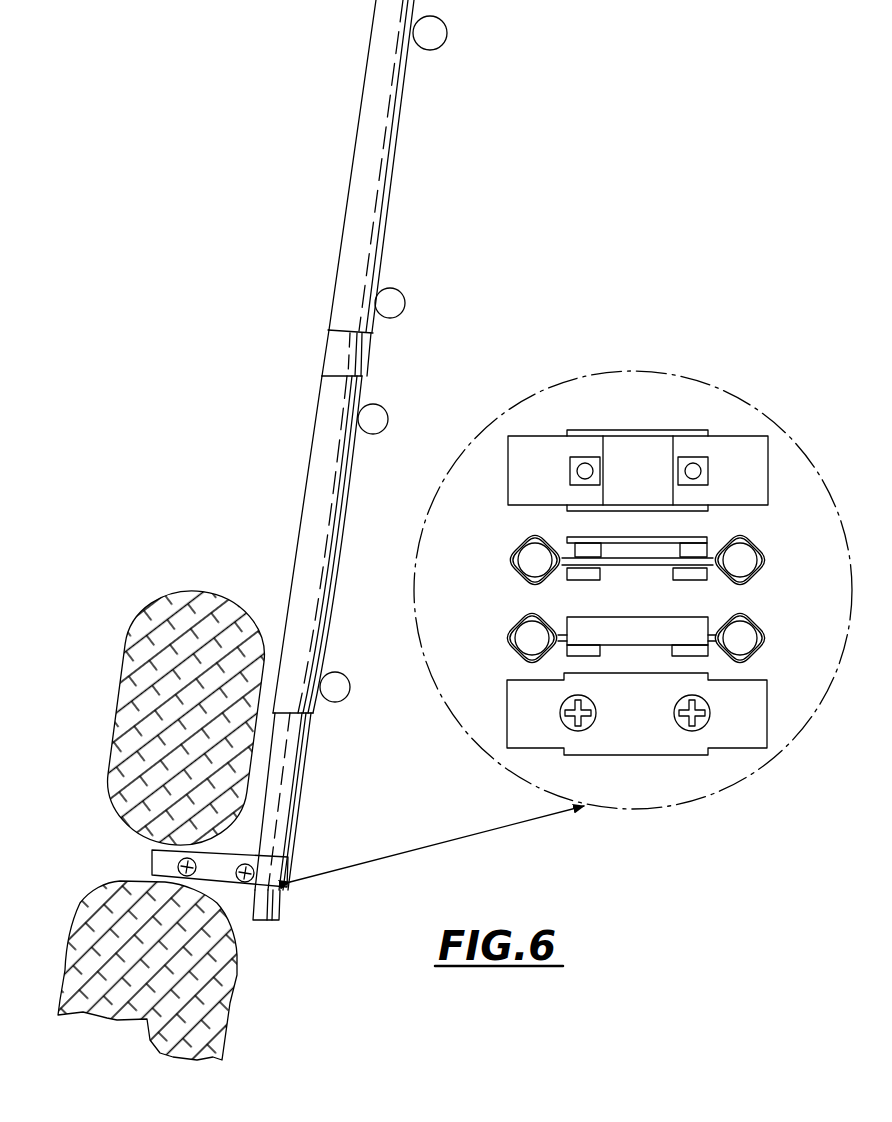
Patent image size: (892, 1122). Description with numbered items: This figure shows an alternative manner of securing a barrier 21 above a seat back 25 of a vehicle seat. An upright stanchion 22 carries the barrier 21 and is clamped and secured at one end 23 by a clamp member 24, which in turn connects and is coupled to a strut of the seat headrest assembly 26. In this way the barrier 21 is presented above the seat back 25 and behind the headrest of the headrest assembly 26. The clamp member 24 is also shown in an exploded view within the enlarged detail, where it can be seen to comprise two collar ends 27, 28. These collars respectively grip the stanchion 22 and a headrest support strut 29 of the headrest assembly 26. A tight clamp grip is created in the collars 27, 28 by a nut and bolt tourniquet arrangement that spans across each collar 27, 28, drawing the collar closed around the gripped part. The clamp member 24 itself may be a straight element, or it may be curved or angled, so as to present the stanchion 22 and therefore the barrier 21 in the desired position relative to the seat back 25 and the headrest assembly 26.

The barrier 21 is at (352, 106).
The stanchion 22 is at (743, 557).
The end of stanchion 23 is at (282, 906).
The clamp member 24 is at (286, 880).
The seat back 25 is at (238, 1000).
The headrest assembly 26 is at (194, 596).
The collar end 27 is at (760, 582).
The collar end 28 is at (518, 629).
The headrest support strut 29 is at (530, 554).